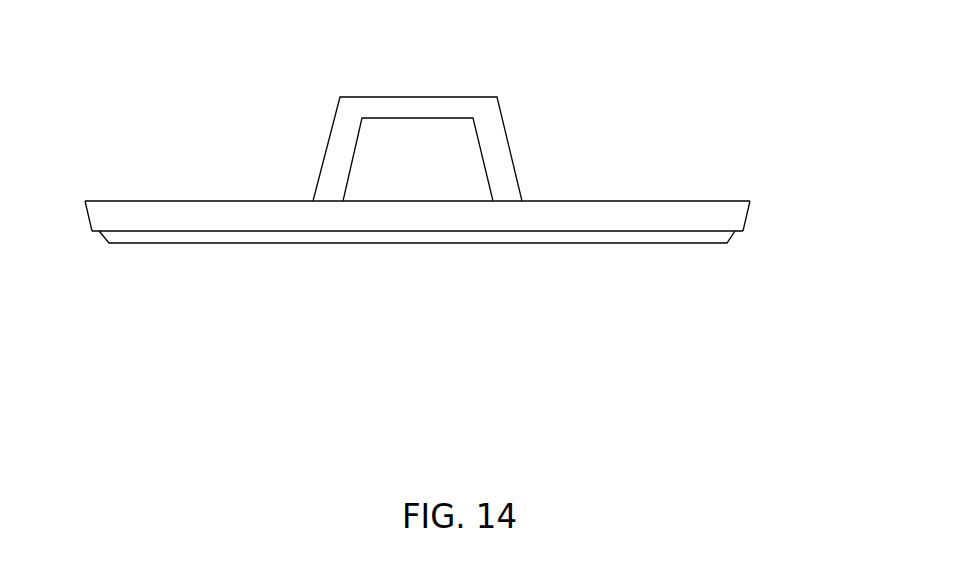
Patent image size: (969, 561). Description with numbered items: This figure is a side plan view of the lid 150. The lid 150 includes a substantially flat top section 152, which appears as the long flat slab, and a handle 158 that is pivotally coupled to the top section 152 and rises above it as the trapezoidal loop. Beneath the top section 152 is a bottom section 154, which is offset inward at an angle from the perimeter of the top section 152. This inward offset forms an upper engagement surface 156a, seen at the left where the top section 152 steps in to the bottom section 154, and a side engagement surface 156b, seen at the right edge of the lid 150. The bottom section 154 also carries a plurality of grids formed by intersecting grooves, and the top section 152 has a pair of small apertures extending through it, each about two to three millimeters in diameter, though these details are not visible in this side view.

The lid 150 is at (686, 137).
The top section 152 is at (112, 213).
The bottom section 154 is at (640, 245).
The upper engagement surface 156a is at (97, 233).
The side engagement surface 156b is at (733, 235).
The handle 158 is at (445, 107).